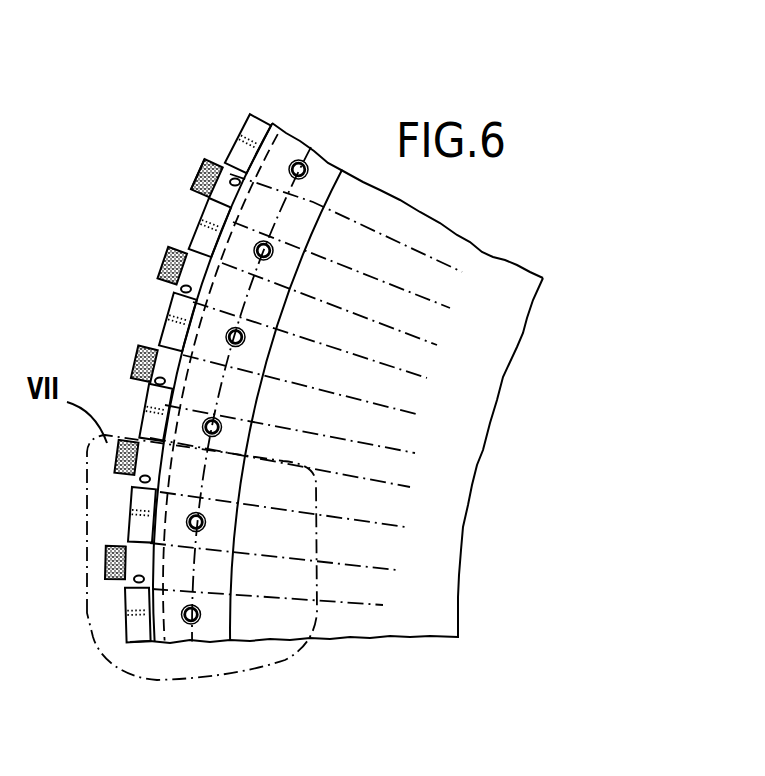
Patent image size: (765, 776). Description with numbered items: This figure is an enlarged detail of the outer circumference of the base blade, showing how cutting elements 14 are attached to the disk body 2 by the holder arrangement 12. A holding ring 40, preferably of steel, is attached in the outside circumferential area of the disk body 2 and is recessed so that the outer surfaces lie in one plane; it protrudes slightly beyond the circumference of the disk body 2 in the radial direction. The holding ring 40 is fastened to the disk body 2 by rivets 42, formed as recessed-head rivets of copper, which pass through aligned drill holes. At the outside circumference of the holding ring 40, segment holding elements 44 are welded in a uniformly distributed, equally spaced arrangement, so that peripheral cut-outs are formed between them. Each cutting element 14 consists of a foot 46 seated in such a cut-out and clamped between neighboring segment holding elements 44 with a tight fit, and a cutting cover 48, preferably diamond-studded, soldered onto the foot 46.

The disk body 2 is at (488, 263).
The holder arrangement 12 is at (273, 120).
The cutting element 14 is at (200, 152).
The holding ring 40 is at (328, 172).
The rivet 42 is at (206, 523).
The segment holding element 44 is at (251, 118).
The foot 46 is at (239, 185).
The cutting cover 48 is at (195, 175).